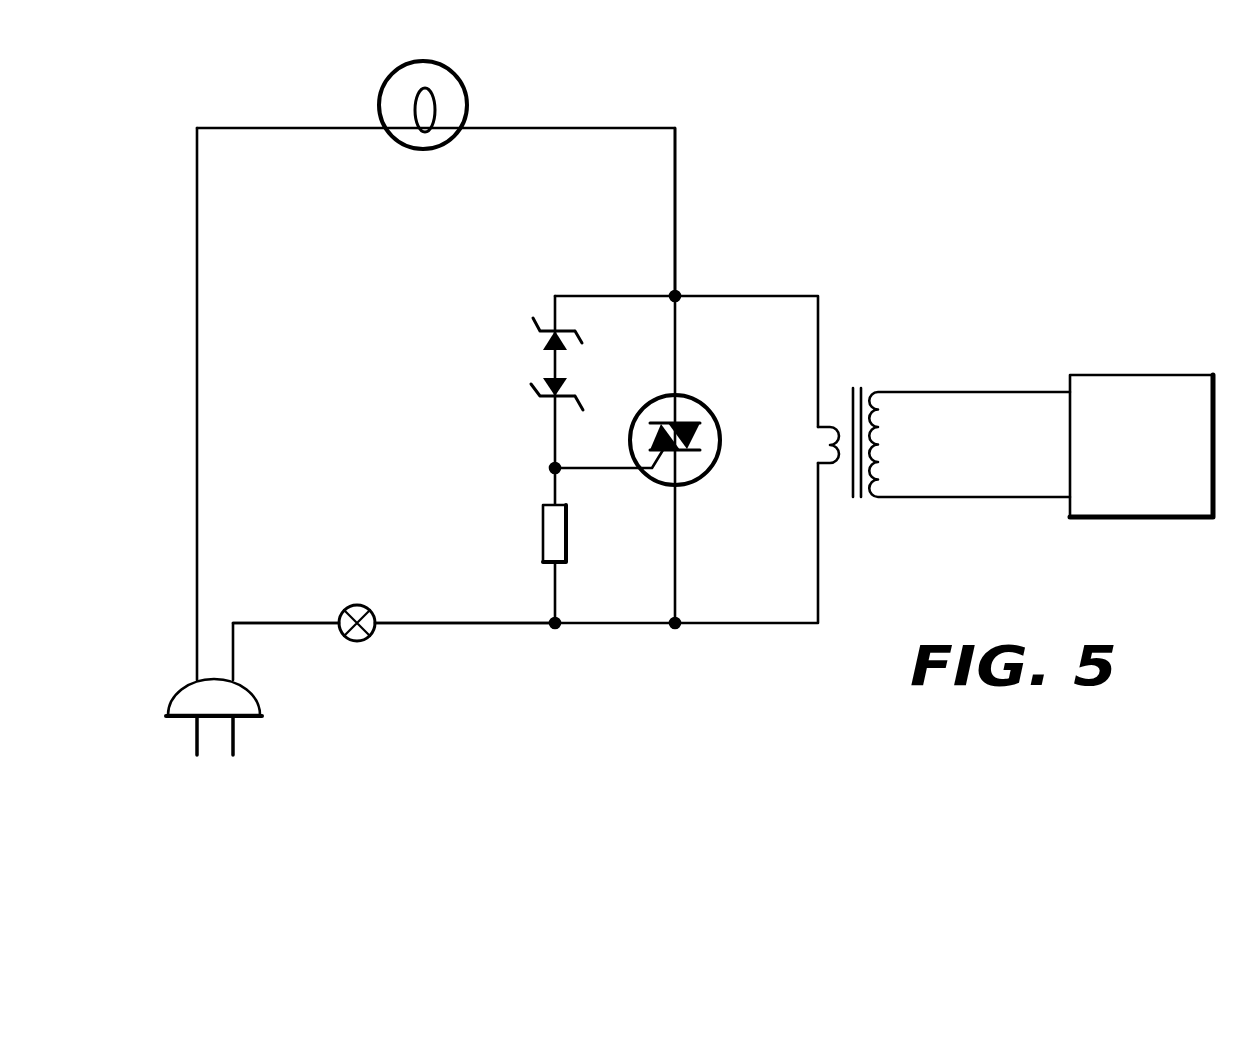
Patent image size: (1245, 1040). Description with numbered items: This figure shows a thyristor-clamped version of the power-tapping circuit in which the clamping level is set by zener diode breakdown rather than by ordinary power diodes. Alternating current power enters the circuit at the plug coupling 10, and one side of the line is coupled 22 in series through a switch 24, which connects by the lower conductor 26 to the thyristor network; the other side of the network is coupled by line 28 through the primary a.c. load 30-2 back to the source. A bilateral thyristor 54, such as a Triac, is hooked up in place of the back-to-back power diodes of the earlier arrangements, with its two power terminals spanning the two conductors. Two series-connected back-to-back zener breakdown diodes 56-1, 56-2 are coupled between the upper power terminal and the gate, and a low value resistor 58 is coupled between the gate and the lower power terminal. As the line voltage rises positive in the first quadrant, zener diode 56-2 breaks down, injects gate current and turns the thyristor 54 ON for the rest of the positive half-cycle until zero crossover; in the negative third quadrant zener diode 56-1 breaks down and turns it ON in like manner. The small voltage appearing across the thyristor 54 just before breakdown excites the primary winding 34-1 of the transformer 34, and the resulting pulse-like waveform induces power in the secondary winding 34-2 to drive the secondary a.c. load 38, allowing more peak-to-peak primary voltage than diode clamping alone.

The a.c. power coupling 10 is at (170, 702).
The line coupling to switch 22 is at (265, 620).
The switch 24 is at (374, 640).
The conductor 26 is at (462, 620).
The line 28 is at (678, 217).
The load 30-2 is at (476, 102).
The transformer 34 is at (866, 383).
The primary winding 34-1 is at (810, 445).
The secondary winding 34-2 is at (888, 456).
The secondary a.c. load 38 is at (1193, 372).
The bilateral thyristor 54 is at (636, 413).
The zener breakdown diode 56-1 is at (528, 332).
The zener breakdown diode 56-2 is at (521, 393).
The resistor 58 is at (540, 540).